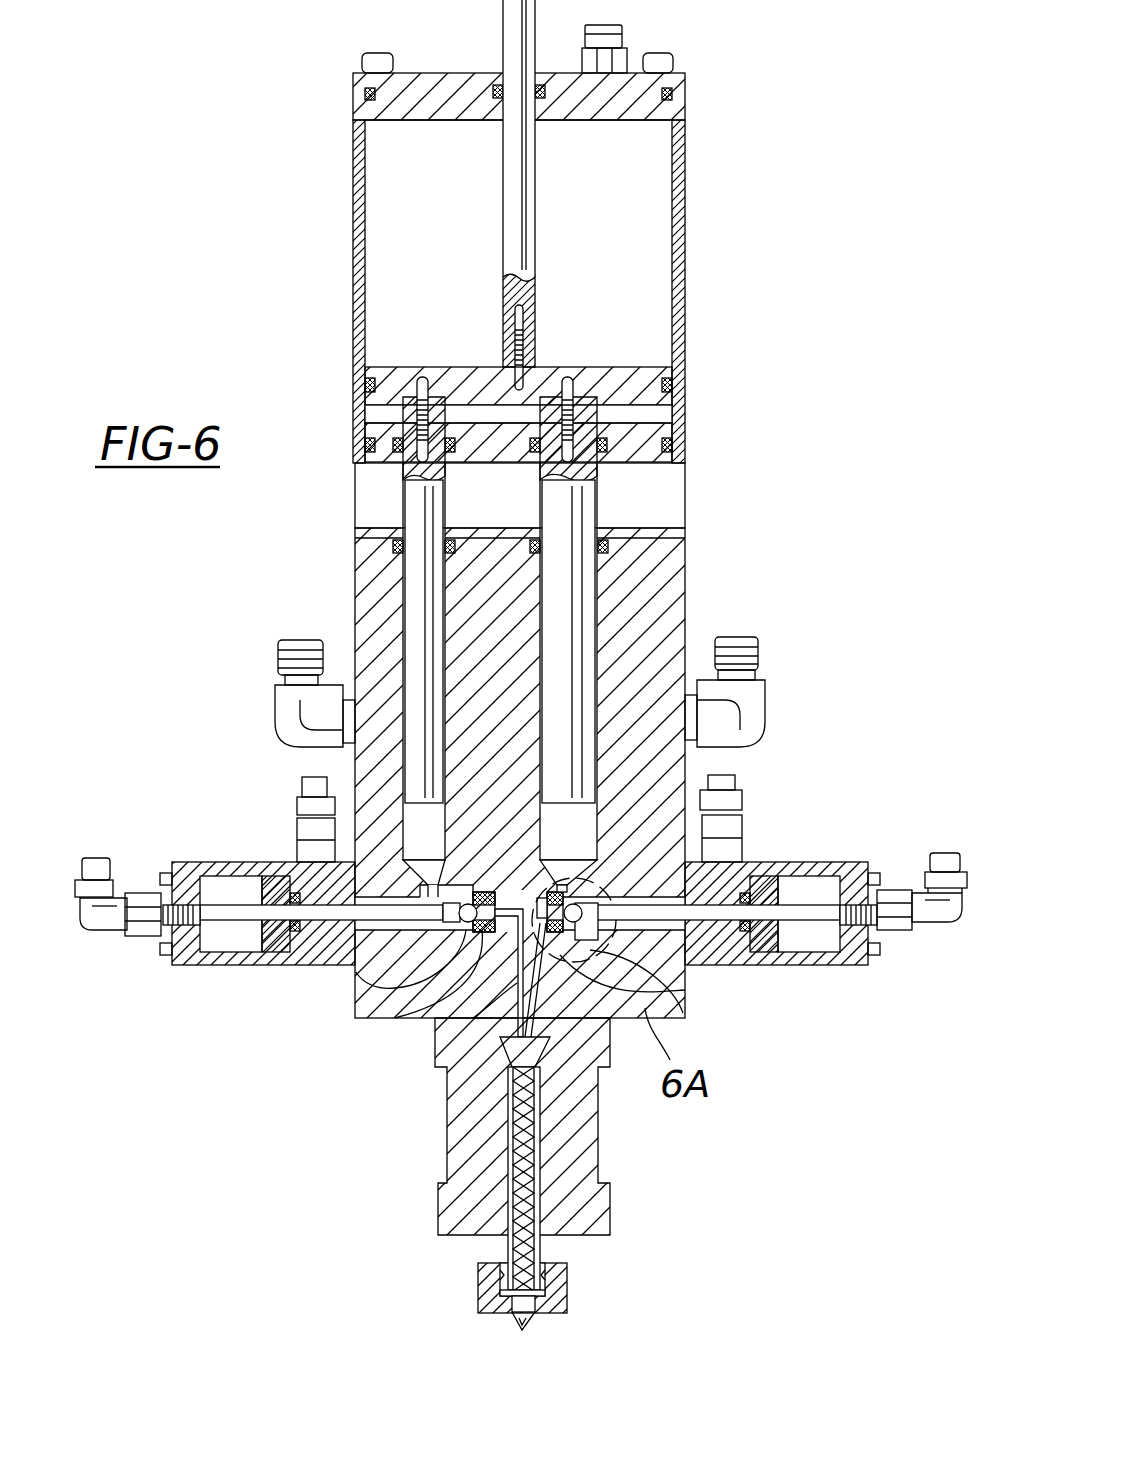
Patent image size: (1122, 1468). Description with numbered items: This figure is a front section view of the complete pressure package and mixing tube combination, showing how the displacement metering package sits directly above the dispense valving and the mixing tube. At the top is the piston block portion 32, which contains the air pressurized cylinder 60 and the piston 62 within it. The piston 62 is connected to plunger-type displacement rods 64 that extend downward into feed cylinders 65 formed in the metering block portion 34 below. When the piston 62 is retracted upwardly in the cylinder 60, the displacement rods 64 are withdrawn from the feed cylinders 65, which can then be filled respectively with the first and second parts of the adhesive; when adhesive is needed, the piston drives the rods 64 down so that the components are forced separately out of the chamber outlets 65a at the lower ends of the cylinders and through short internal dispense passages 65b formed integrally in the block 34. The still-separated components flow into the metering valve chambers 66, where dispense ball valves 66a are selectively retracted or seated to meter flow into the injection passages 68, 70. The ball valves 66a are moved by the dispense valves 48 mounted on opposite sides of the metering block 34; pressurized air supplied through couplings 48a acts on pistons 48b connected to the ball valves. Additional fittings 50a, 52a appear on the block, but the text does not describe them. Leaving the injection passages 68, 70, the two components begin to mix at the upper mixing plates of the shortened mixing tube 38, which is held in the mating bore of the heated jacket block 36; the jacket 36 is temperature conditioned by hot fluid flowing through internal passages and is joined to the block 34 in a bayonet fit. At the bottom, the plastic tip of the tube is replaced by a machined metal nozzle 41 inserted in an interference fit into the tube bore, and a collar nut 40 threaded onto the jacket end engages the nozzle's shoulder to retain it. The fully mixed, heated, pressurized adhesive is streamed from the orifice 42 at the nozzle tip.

The piston block portion 32 is at (685, 203).
The metering block portion 34 is at (690, 556).
The heated jacket block 36 is at (605, 1140).
The mixing tube 38 is at (512, 1212).
The collar nut 40 is at (567, 1297).
The machined metal nozzle 41 is at (518, 1318).
The orifice 42 is at (528, 1328).
The dispense valves 48 is at (215, 860).
The couplings 48a is at (95, 858).
The pistons 48b is at (222, 965).
The air fitting 50a is at (283, 643).
The air fitting 52a is at (740, 640).
The air pressurized cylinder 60 is at (645, 275).
The piston 62 is at (462, 365).
The displacement rods 64 is at (405, 505).
The feed cylinders 65 is at (415, 822).
The chamber outlets 65a is at (425, 860).
The internal dispense passages 65b is at (372, 975).
The metering valve chambers 66 is at (640, 962).
The dispense ball valves 66a is at (376, 1018).
The injection passage 68 is at (473, 1018).
The injection passage 70 is at (612, 1040).